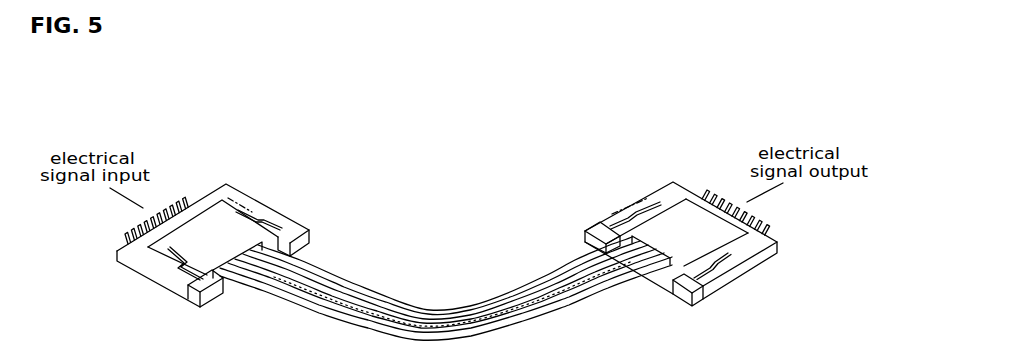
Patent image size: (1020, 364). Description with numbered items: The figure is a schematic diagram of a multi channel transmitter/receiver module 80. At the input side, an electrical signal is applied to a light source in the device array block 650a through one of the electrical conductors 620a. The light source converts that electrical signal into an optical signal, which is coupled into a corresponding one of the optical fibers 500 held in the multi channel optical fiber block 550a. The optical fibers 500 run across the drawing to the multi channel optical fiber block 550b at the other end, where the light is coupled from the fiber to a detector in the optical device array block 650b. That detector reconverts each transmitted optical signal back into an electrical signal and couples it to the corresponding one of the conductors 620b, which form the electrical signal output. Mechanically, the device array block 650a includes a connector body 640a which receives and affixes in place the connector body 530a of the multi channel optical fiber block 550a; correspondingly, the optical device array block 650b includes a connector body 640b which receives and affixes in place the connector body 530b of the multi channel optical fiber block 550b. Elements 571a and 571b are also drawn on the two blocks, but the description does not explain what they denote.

The multi channel transmitter/receiver module 80 is at (500, 105).
The optical fibers 500 is at (443, 312).
The connector body 530a is at (211, 297).
The connector body 530b is at (677, 295).
The multi channel optical fiber block 550a is at (218, 222).
The multi channel optical fiber block 550b is at (676, 213).
The first signal trace 571a is at (229, 198).
The second signal trace 571b is at (659, 113).
The electrical conductors 620a is at (125, 228).
The conductors 620b is at (758, 220).
The connector body 640a is at (150, 260).
The connector body 640b is at (745, 258).
The device array block 650a is at (190, 197).
The optical device array block 650b is at (700, 188).